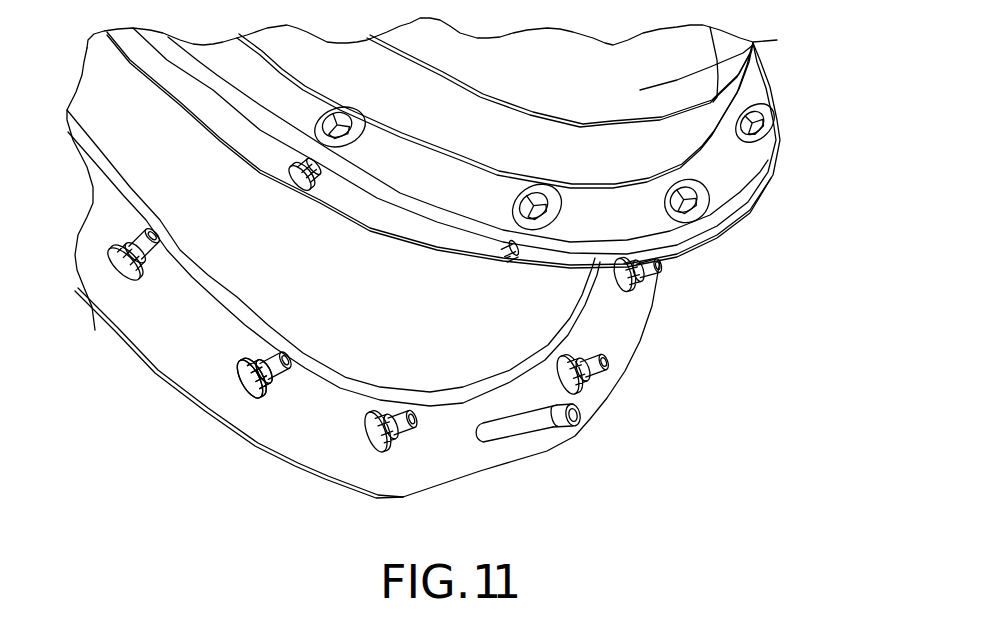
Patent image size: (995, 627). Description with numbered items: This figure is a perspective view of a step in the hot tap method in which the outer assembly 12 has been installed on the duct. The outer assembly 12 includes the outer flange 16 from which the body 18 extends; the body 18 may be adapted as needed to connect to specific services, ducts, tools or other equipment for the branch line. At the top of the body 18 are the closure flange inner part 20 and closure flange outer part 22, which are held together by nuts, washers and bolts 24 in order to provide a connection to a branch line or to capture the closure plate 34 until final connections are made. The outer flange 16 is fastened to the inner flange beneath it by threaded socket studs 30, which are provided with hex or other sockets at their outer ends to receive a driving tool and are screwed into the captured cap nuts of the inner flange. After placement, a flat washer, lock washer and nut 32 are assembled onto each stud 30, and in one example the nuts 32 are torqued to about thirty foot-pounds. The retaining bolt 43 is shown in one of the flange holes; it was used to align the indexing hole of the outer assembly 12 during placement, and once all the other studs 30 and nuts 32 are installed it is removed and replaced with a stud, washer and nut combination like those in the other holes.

The outer assembly 12 is at (693, 307).
The outer flange 16 is at (148, 330).
The body 18 is at (267, 292).
The closure flange inner part 20 is at (740, 210).
The closure flange outer part 22 is at (740, 210).
The bolts 24 is at (773, 132).
The threaded socket studs 30 is at (273, 397).
The nuts, washers and lock washers 32 is at (236, 372).
The closure plate 34 is at (763, 48).
The retaining bolt 43 is at (528, 427).